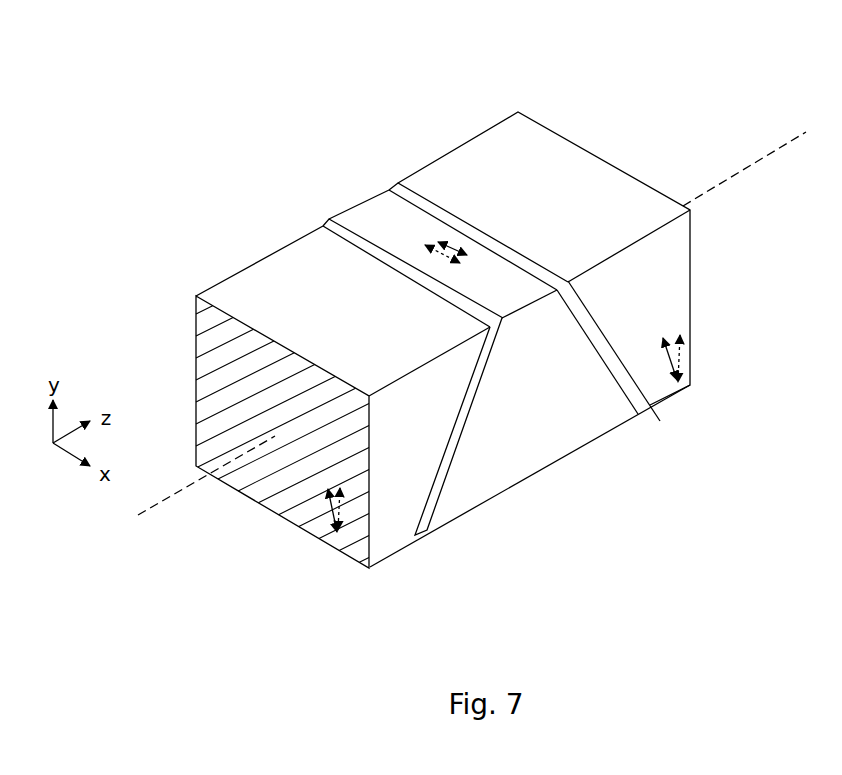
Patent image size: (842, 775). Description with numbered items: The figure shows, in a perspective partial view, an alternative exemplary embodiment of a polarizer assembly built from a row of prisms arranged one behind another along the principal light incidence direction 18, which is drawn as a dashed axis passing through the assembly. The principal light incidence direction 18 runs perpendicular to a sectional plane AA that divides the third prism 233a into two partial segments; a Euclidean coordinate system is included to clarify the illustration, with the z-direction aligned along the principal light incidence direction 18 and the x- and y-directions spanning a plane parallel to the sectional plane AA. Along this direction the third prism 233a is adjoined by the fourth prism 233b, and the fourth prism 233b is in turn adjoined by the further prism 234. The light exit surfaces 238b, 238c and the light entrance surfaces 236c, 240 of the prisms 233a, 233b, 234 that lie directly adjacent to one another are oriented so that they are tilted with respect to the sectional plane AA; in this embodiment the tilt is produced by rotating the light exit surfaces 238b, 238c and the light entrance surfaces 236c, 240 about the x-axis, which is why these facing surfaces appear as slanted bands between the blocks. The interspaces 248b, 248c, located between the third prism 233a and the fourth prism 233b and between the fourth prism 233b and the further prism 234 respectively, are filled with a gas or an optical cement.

The principal light incidence direction 18 is at (138, 515).
The third prism 233a is at (233, 292).
The fourth prism 233b is at (372, 205).
The further prism 234 is at (503, 143).
The interspace 248b is at (328, 225).
The interspace 248c is at (402, 196).
The light exit surface 238b is at (424, 541).
The light exit surface 238c is at (660, 421).
The light entrance surface 236c is at (462, 410).
The light entrance surface 240 is at (596, 347).